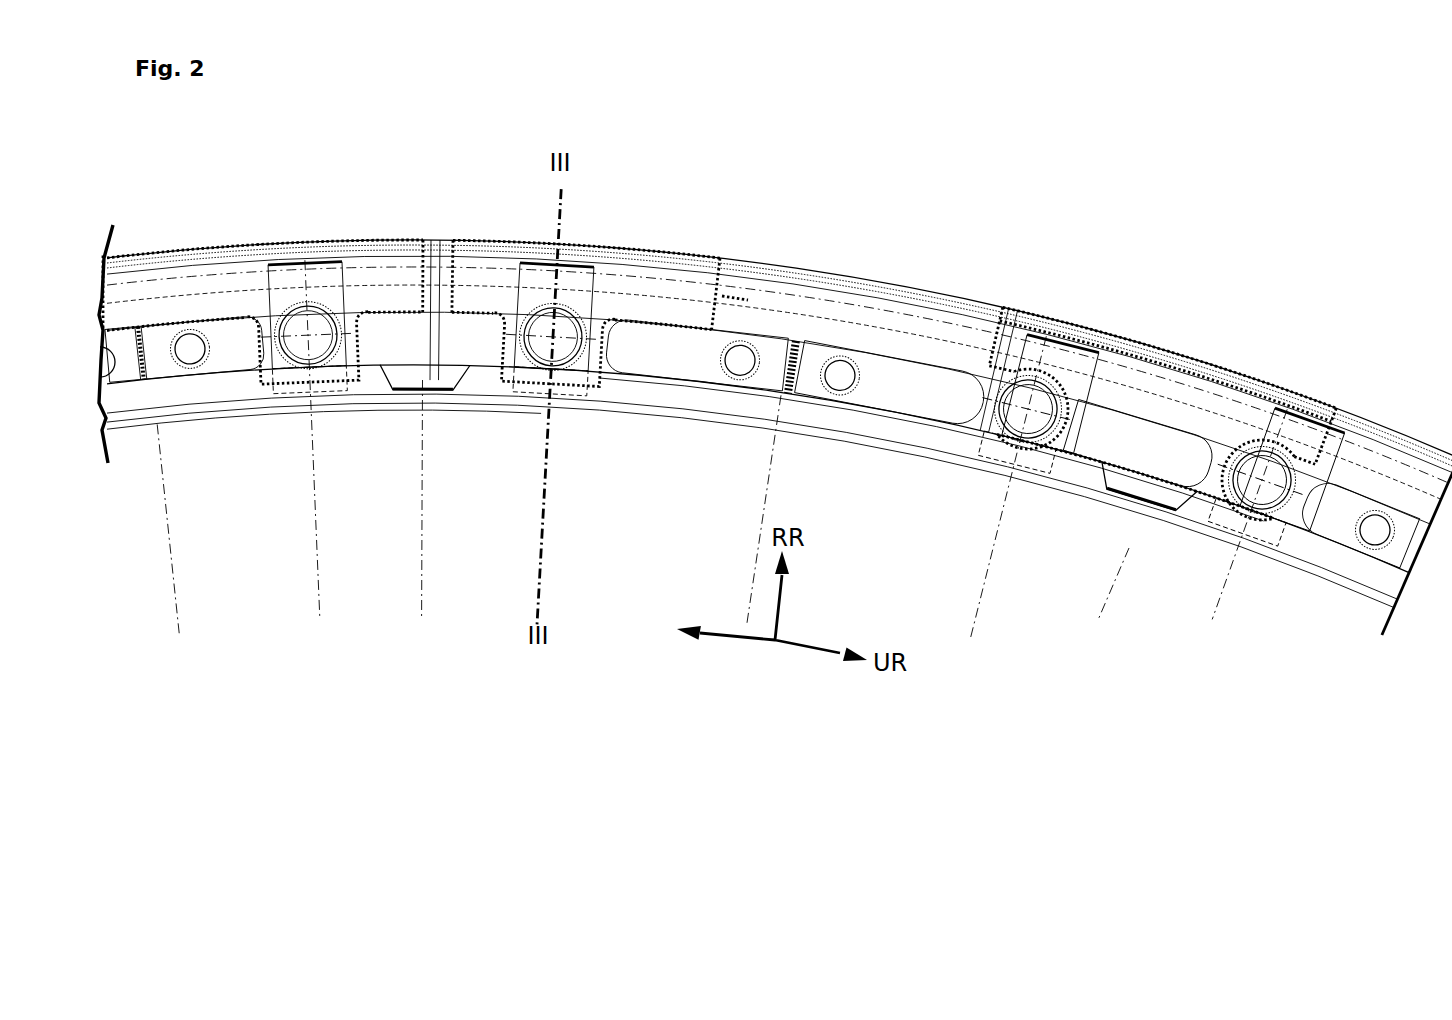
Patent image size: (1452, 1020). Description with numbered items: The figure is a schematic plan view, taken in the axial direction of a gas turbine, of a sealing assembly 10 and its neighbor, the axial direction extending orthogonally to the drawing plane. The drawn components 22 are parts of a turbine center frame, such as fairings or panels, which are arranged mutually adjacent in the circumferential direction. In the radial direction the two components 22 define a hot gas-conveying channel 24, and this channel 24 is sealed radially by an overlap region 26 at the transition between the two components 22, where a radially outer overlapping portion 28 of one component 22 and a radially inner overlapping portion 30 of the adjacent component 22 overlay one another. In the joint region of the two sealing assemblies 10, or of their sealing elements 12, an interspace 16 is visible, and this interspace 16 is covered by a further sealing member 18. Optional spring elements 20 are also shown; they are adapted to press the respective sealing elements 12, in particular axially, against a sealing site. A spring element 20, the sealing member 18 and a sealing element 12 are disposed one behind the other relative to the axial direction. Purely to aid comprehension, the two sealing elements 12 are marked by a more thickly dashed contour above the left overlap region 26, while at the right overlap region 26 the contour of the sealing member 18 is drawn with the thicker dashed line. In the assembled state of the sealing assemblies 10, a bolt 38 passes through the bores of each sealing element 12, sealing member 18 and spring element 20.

The sealing assembly 10 is at (372, 213).
The sealing element 12 is at (192, 276).
The interspace 16 is at (437, 232).
The sealing member 18 is at (255, 280).
The spring element 20 is at (275, 358).
The component 22 is at (207, 390).
The hot gas-conveying channel 24 is at (708, 428).
The overlap region 26 is at (1126, 549).
The radially outer overlapping portion 28 is at (412, 388).
The radially inner overlapping portion 30 is at (462, 402).
The bolt 38 is at (302, 342).